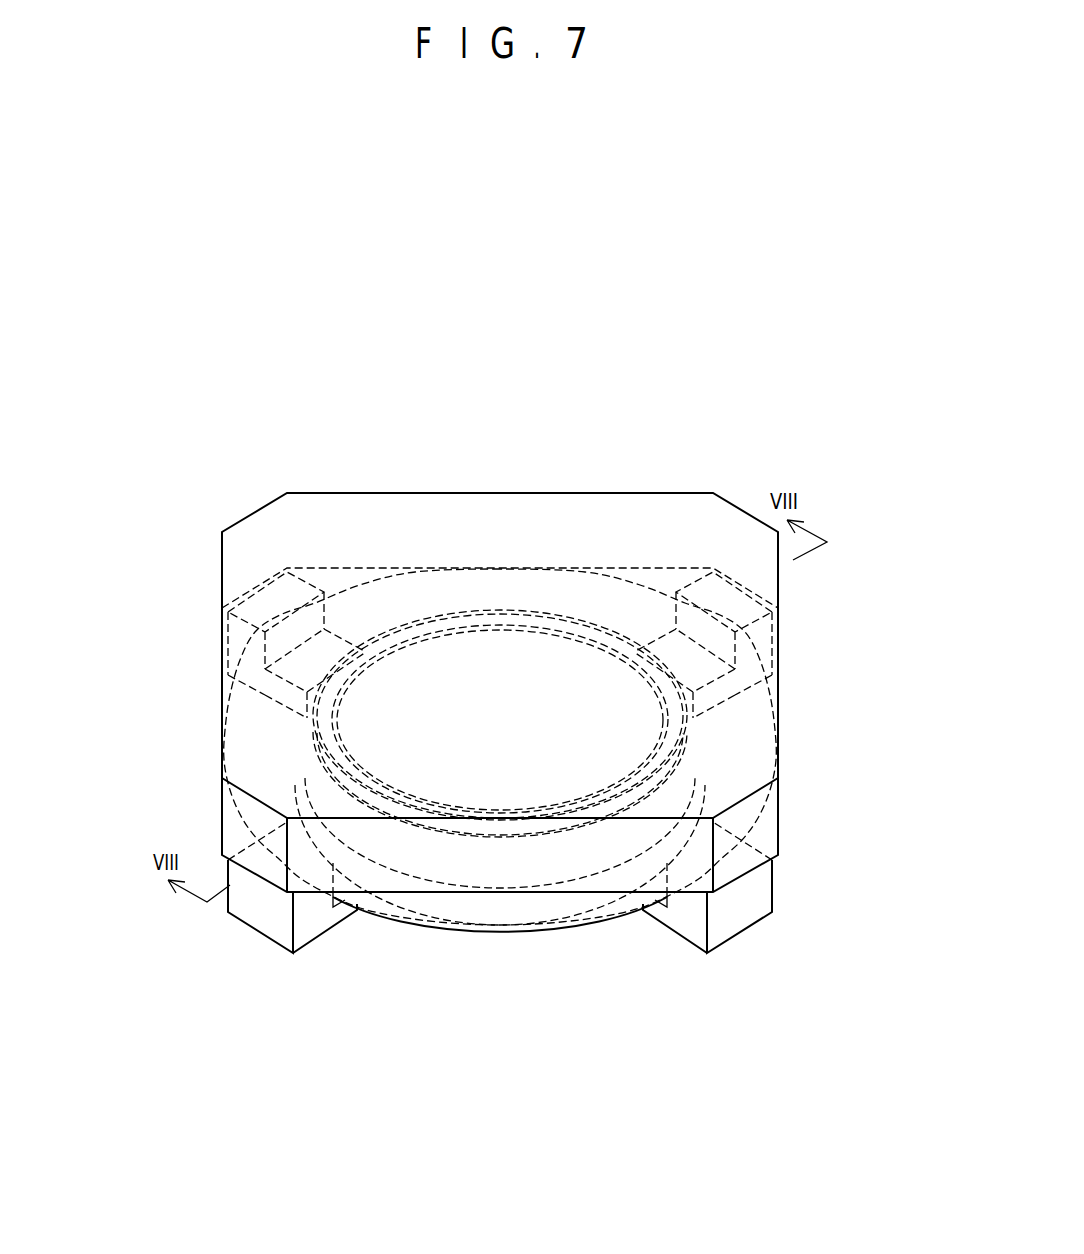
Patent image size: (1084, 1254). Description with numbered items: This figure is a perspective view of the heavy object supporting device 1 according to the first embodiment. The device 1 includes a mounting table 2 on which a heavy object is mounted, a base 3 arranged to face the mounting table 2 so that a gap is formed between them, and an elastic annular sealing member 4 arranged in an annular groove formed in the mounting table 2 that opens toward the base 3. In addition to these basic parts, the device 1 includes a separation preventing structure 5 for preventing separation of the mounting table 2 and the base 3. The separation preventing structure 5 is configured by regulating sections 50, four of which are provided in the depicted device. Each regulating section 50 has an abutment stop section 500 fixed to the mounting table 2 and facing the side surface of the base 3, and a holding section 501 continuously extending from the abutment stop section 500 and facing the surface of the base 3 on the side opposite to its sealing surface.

The heavy object supporting device 1 is at (675, 458).
The mounting table 2 is at (250, 507).
The base 3 is at (495, 937).
The elastic annular sealing member 4 is at (473, 617).
The separation preventing structure 5 is at (128, 612).
The regulating section 50 is at (500, 801).
The abutment stop section 500 is at (240, 643).
The holding section 501 is at (277, 699).